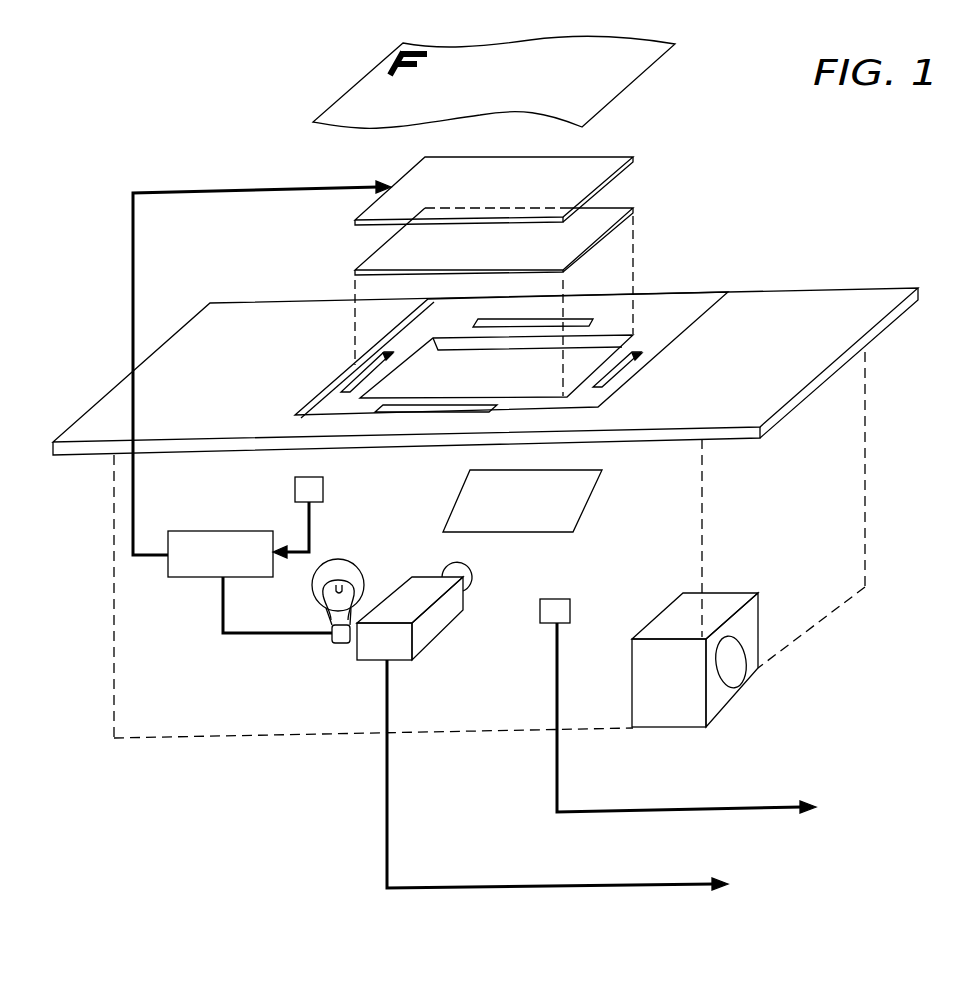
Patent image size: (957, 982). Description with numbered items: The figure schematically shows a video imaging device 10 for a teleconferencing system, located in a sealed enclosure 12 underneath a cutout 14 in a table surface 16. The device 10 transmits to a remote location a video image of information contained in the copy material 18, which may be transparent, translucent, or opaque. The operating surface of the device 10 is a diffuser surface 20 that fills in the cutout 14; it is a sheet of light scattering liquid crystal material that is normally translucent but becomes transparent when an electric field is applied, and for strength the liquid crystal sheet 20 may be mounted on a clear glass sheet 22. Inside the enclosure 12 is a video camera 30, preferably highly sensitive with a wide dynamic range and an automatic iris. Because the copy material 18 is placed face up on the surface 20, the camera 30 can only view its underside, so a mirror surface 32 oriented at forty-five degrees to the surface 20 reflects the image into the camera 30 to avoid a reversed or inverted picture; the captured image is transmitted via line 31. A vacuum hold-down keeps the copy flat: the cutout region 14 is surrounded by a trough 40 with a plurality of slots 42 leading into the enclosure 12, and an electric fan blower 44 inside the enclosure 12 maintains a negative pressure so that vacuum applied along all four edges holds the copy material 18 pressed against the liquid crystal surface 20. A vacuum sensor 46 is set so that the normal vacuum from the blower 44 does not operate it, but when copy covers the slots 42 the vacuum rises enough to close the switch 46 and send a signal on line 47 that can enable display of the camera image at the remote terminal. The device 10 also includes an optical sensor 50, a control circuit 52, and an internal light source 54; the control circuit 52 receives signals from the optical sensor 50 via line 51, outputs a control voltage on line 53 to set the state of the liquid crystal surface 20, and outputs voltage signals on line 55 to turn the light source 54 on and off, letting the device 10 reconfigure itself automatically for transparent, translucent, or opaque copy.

The video imaging device 10 is at (817, 178).
The sealed enclosure 12 is at (227, 738).
The cutout 14 is at (593, 358).
The table surface 16 is at (856, 302).
The copy material 18 is at (620, 62).
The diffuser surface 20 is at (617, 157).
The clear glass sheet 22 is at (617, 208).
The video camera 30 is at (437, 620).
The line 31 is at (618, 884).
The mirror surface 32 is at (589, 493).
The trough 40 is at (400, 338).
The slots 42 is at (352, 385).
The electric fan blower 44 is at (670, 600).
The vacuum sensor 46 is at (570, 604).
The line 47 is at (727, 807).
The optical sensor 50 is at (295, 490).
The line 51 is at (310, 522).
The control circuit 52 is at (195, 531).
The line 53 is at (133, 493).
The internal light source 54 is at (367, 576).
The line 55 is at (280, 633).